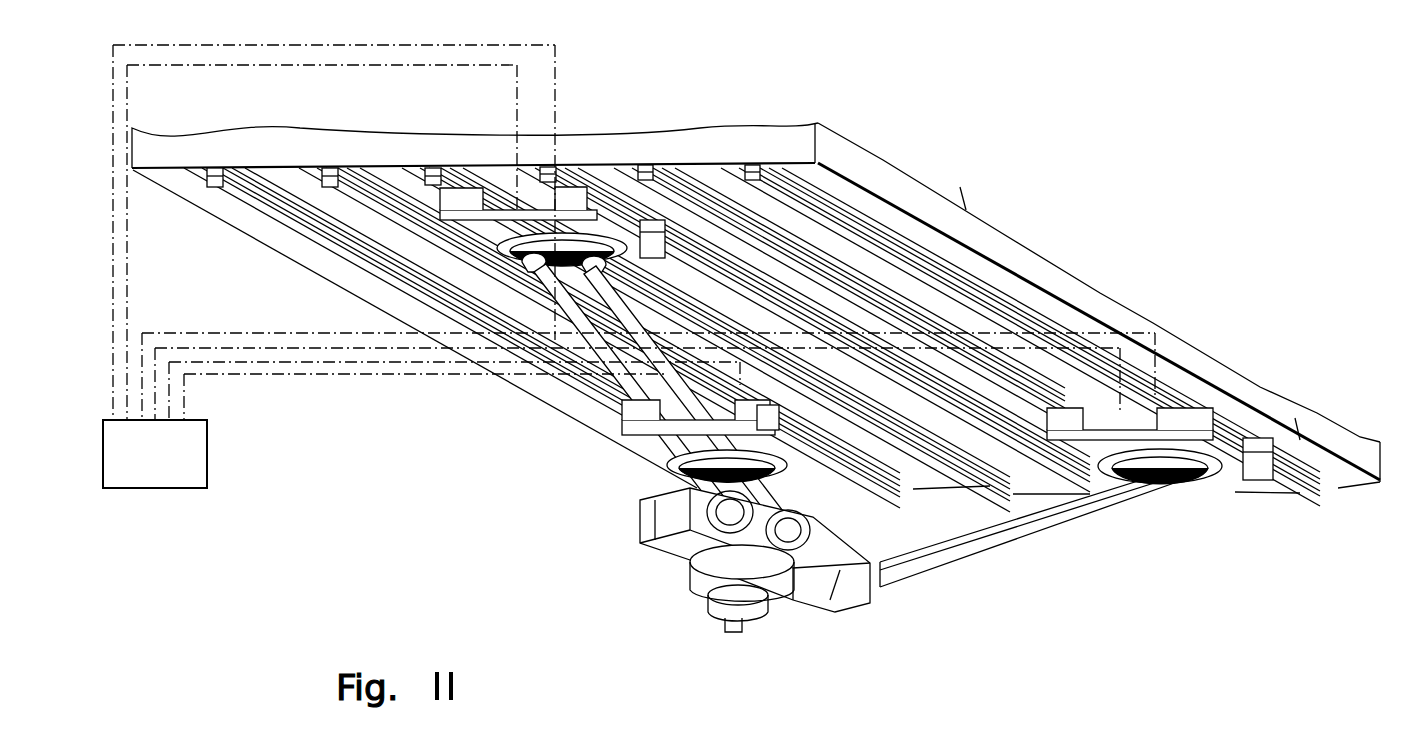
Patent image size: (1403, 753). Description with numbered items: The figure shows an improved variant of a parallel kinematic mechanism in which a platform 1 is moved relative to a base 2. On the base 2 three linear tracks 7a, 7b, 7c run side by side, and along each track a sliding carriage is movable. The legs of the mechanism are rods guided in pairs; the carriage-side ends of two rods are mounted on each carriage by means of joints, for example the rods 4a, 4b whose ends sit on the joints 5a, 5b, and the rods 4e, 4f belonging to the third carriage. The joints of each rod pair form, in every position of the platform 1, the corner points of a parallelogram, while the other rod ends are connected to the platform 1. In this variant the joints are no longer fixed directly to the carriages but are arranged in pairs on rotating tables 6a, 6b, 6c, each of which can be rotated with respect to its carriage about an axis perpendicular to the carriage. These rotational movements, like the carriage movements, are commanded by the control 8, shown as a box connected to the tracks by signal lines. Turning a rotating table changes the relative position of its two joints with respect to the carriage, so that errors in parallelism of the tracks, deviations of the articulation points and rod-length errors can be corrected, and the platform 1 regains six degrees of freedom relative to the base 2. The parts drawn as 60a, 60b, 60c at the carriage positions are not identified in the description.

The platform 1 is at (833, 598).
The base 2 is at (912, 188).
The rod 4a is at (630, 318).
The rod 4b is at (610, 418).
The rod 4e is at (1015, 527).
The rod 4f is at (970, 537).
The joint 5a is at (598, 258).
The joint 5b is at (524, 262).
The rotating table 6a is at (498, 228).
The rotating table 6b is at (640, 450).
The rotating table 6c is at (1280, 472).
The linear track 7a is at (215, 170).
The linear track 7b is at (433, 166).
The linear track 7c is at (645, 168).
The control 8 is at (203, 488).
The bearing 60a is at (570, 275).
The bearing 60b is at (678, 466).
The bearing 60c is at (1185, 468).